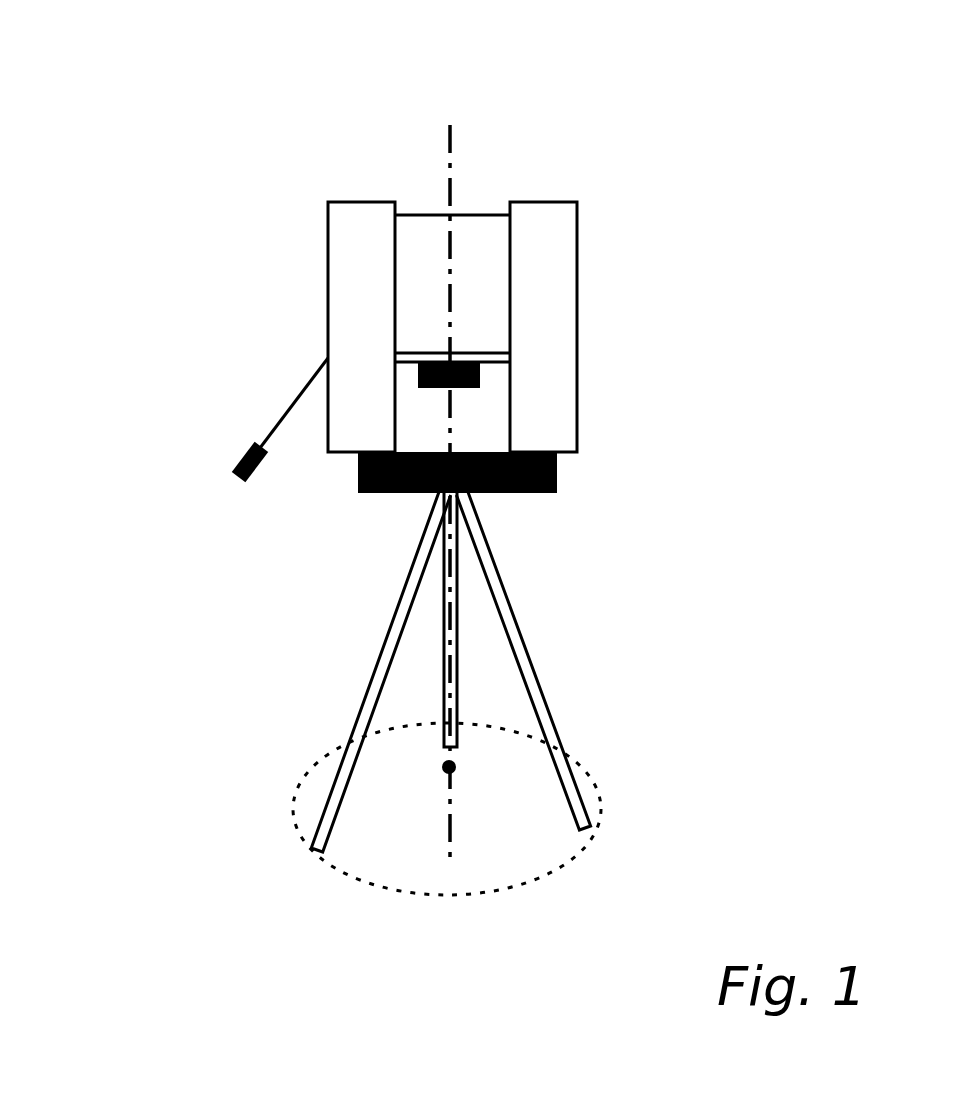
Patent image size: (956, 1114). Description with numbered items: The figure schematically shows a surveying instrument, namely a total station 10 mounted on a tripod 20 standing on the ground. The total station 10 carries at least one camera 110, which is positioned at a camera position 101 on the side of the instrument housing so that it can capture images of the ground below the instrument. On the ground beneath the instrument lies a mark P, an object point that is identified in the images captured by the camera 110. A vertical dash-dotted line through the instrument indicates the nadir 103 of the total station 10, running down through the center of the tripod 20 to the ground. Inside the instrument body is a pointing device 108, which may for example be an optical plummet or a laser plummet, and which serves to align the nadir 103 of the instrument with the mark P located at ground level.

The total station 10 is at (261, 136).
The nadir 103 is at (448, 205).
The pointing device 108 is at (480, 373).
The camera position 101 is at (240, 457).
The camera 110 is at (220, 463).
The tripod 20 is at (547, 702).
The mark P is at (449, 767).